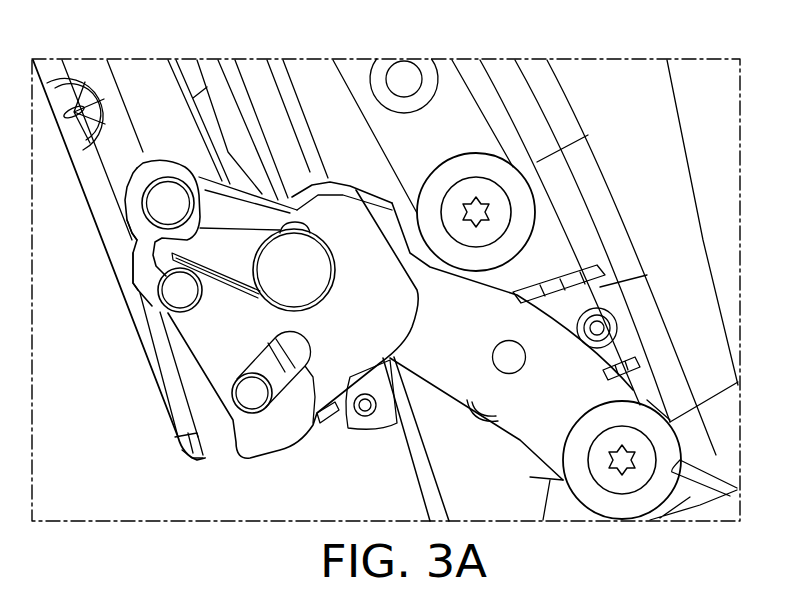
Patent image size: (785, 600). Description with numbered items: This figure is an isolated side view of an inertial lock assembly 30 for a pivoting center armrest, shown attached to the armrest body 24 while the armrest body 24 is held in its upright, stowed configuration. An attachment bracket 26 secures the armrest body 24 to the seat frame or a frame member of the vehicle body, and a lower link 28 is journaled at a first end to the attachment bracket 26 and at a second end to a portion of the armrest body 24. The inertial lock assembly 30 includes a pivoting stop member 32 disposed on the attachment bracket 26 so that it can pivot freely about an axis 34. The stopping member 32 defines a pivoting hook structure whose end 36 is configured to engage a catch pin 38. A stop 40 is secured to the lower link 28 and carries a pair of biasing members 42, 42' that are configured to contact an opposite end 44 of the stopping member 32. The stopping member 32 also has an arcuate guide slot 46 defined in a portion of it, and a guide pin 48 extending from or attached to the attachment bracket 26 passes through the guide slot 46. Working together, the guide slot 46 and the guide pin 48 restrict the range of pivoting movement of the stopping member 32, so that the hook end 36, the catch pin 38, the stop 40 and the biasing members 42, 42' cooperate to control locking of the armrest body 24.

The armrest body 24 is at (616, 124).
The attachment bracket 26 is at (150, 337).
The lower link 28 is at (439, 352).
The inertial lock assembly 30 is at (160, 458).
The pivoting stop member 32 is at (346, 336).
The axis 34 is at (180, 302).
The end of stopping member 36 is at (334, 210).
The catch pin 38 is at (279, 285).
The stop 40 is at (223, 197).
The biasing member 42 is at (163, 121).
The biasing member 42' is at (96, 280).
The end of stopping member 44 is at (136, 246).
The arcuate guide slot 46 is at (313, 410).
The guide pin 48 is at (252, 402).